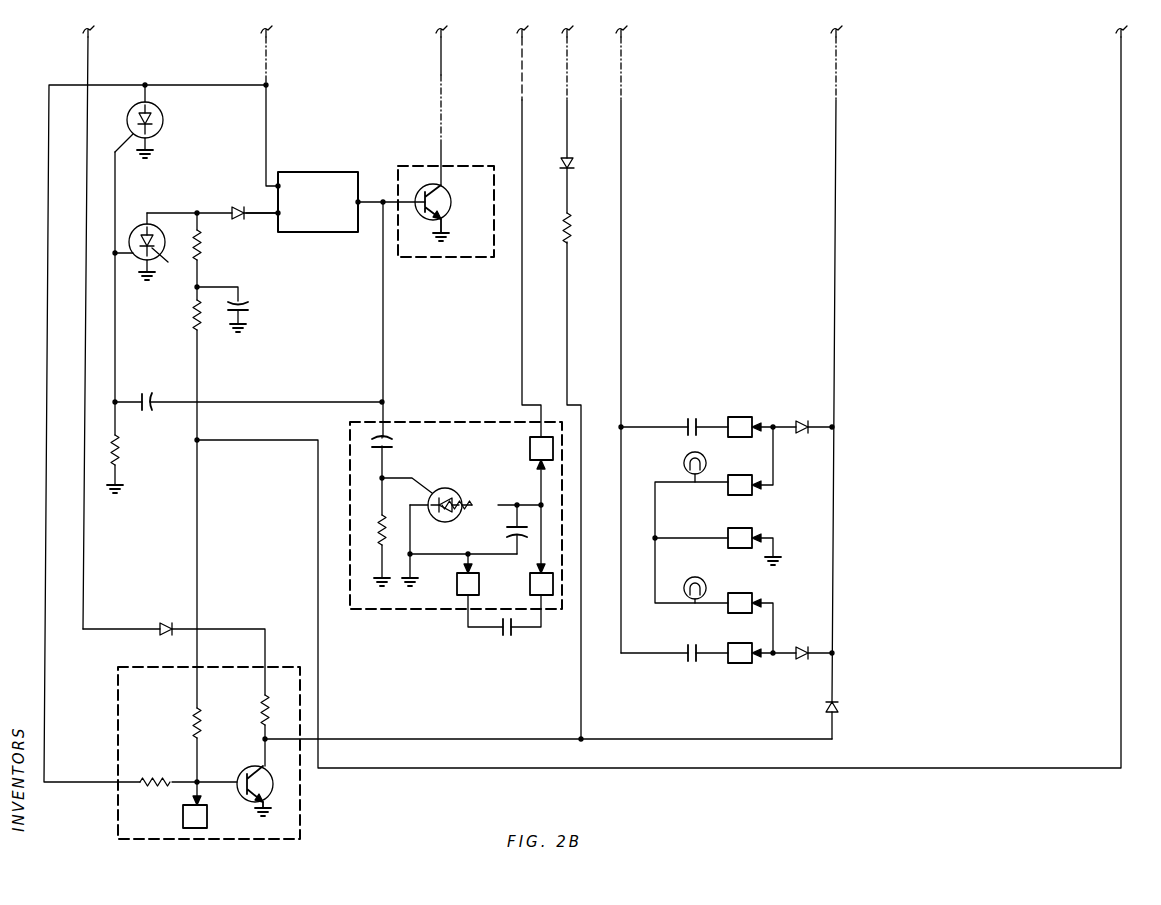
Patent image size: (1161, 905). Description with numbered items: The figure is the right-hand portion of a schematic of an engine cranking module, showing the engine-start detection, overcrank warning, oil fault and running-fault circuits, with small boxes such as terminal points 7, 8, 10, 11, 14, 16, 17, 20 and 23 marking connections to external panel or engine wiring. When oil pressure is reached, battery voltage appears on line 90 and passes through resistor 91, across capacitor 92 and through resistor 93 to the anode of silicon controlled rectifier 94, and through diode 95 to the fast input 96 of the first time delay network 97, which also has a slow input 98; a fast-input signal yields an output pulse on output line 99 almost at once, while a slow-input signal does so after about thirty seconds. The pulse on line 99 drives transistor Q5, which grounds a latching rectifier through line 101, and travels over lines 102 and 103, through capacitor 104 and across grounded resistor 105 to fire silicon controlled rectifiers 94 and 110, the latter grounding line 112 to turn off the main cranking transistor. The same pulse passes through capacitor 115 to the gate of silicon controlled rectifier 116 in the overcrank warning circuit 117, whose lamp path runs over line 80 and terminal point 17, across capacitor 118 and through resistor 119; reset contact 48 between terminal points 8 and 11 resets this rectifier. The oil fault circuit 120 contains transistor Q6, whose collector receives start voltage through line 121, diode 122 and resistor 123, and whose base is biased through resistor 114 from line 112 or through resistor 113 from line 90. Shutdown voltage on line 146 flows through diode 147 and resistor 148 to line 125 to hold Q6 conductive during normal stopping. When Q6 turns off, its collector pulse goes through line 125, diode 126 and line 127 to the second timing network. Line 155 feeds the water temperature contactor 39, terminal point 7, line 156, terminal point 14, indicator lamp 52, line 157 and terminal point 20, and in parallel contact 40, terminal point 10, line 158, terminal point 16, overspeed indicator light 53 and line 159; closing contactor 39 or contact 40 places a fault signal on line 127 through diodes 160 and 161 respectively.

The terminal point 7 is at (750, 427).
The terminal point 8 is at (541, 579).
The terminal point 10 is at (750, 653).
The terminal point 11 is at (468, 574).
The terminal point 14 is at (744, 485).
The terminal point 16 is at (744, 603).
The terminal point 17 is at (541, 505).
The terminal point 20 is at (717, 546).
The terminal point 23 is at (195, 804).
The water temperature contactor 39 is at (692, 415).
The contact 40 is at (690, 665).
The reset contact 48 is at (507, 635).
The indicator lamp 52 is at (684, 455).
The overspeed indicator light 53 is at (705, 583).
The line 80 is at (522, 50).
The line 90 is at (1121, 62).
The resistor 91 is at (194, 327).
The capacitor 92 is at (245, 309).
The resistor 93 is at (201, 257).
The silicon controlled rectifier 94 is at (151, 256).
The diode 95 is at (240, 200).
The fast input 96 is at (258, 220).
The first time delay network 97 is at (322, 172).
The slow input 98 is at (266, 52).
The output line 99 is at (374, 200).
The line 101 is at (441, 52).
The line 102 is at (382, 347).
The line 103 is at (258, 402).
The capacitor 104 is at (147, 397).
The grounded resistor 105 is at (118, 452).
The silicon controlled rectifier 110 is at (158, 120).
The line 112 is at (49, 122).
The resistor 113 is at (192, 720).
The resistor 114 is at (152, 778).
The capacitor 115 is at (398, 444).
The silicon controlled rectifier 116 is at (447, 492).
The overcrank warning circuit 117 is at (448, 422).
The capacitor 118 is at (506, 533).
The resistor 119 is at (490, 500).
The oil fault circuit 120 is at (125, 686).
The line 121 is at (88, 52).
The diode 122 is at (165, 624).
The resistor 123 is at (262, 702).
The line 125 is at (441, 739).
The diode 126 is at (845, 707).
The line 127 is at (836, 56).
The line 146 is at (567, 52).
The diode 147 is at (573, 164).
The resistor 148 is at (571, 229).
The line 155 is at (623, 52).
The line 156 is at (774, 466).
The line 157 is at (655, 508).
The line 158 is at (775, 626).
The line 159 is at (655, 563).
The diode 160 is at (800, 418).
The diode 161 is at (800, 662).
The transistor Q5 is at (446, 211).
The transistor Q6 is at (248, 781).